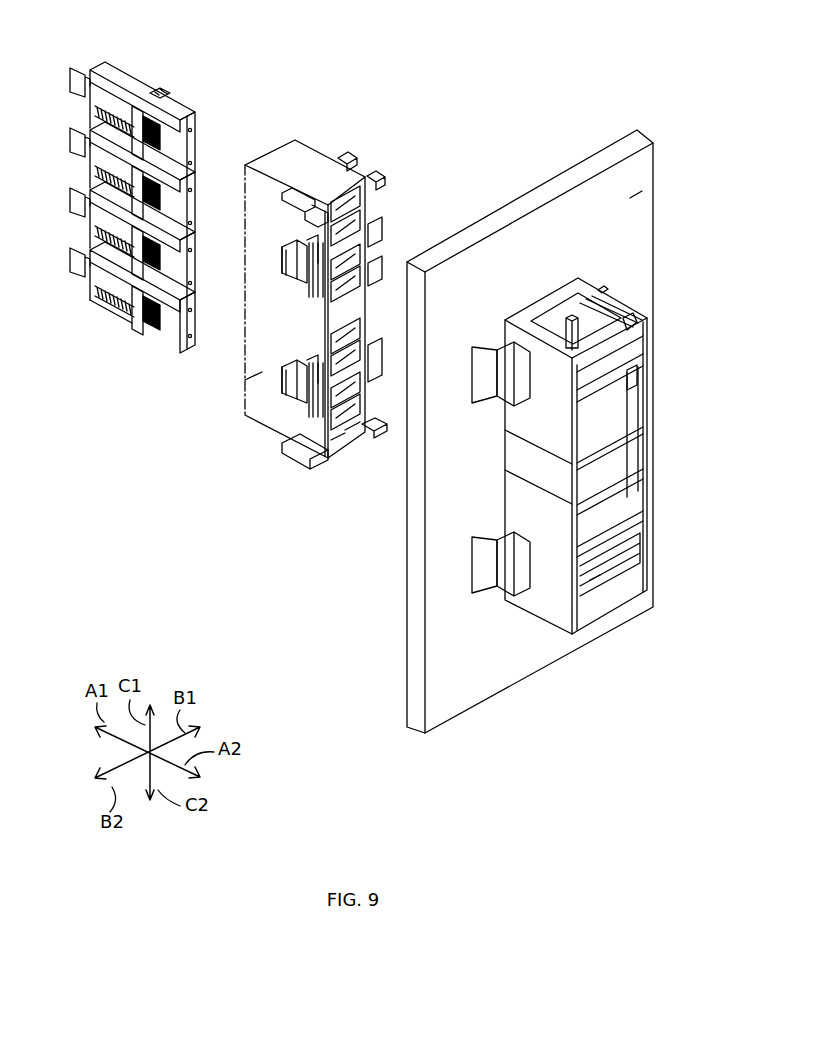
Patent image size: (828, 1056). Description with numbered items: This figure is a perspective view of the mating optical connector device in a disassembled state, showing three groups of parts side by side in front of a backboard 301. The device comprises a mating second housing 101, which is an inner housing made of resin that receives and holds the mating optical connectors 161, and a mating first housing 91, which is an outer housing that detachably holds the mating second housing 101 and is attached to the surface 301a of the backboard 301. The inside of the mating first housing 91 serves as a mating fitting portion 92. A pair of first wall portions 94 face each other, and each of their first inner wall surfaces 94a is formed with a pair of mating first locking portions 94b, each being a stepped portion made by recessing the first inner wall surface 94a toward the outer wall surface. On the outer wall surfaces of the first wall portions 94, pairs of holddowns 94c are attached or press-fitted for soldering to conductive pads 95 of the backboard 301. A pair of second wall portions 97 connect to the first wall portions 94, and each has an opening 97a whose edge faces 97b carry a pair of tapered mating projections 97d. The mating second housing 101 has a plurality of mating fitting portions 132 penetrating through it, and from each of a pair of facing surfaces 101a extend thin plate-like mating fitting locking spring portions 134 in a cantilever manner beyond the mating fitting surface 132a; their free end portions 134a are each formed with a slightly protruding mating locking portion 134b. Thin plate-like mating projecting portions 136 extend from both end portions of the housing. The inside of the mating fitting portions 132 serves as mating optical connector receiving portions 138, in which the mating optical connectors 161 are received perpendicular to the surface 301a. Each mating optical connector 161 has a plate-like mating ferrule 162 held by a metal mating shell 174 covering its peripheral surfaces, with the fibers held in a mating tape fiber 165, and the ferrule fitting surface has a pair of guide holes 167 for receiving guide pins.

The mating first housing 91 is at (540, 625).
The mating fitting portion 92 is at (615, 453).
The first wall portions 94 is at (652, 418).
The first inner wall surfaces 94a is at (620, 555).
The mating first locking portions 94b is at (640, 385).
The holddowns 94c is at (507, 405).
The conductive pads 95 is at (477, 378).
The second wall portions 97 is at (556, 298).
The opening 97a is at (585, 303).
The edge faces 97b is at (615, 300).
The mating projections 97d is at (620, 310).
The mating second housing 101 is at (290, 136).
The surfaces 101a is at (382, 266).
The mating fitting portions 132 is at (375, 212).
The mating fitting surface 132a is at (336, 445).
The mating fitting locking spring portions 134 is at (300, 200).
The free end portions 134a is at (298, 400).
The mating locking portions 134b is at (385, 238).
The mating projecting portions 136 is at (335, 185).
The mating optical connector receiving portions 138 is at (342, 436).
The mating optical connectors 161 is at (186, 102).
The mating ferrule 162 is at (205, 136).
The mating tape fiber 165 is at (75, 66).
The guide holes 167 is at (198, 156).
The metal mating shell 174 is at (135, 72).
The backboard 301 is at (595, 162).
The surface 301a is at (642, 191).